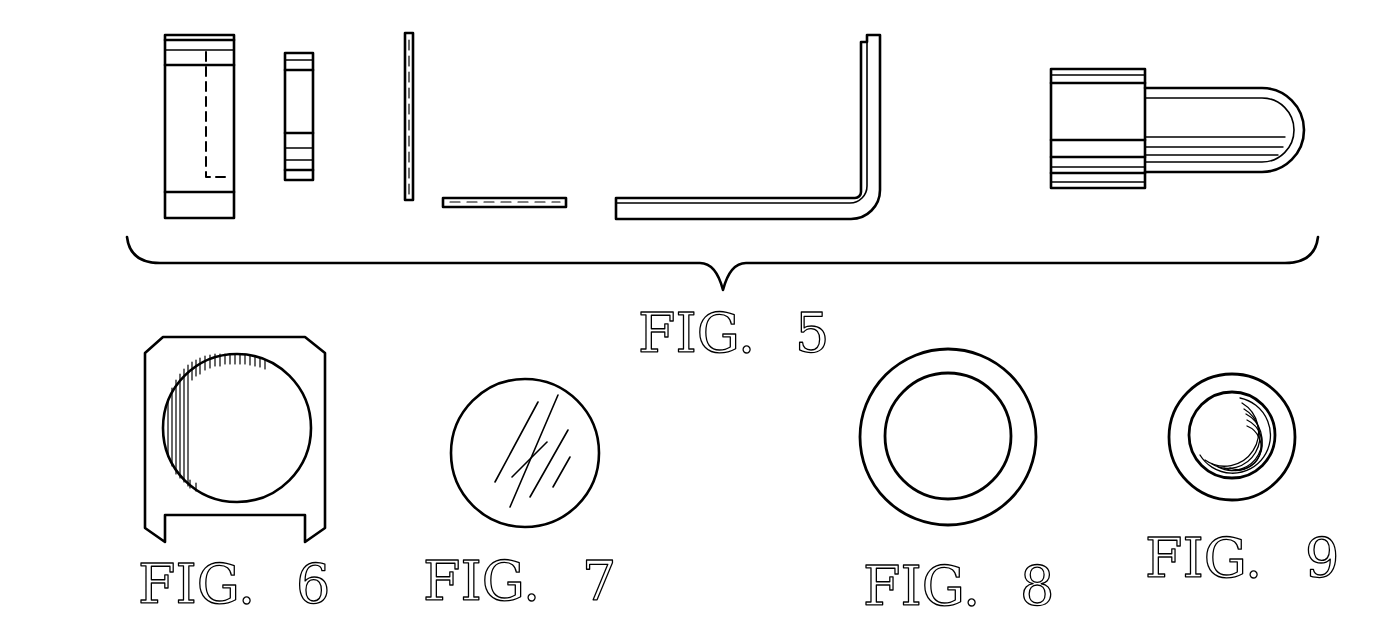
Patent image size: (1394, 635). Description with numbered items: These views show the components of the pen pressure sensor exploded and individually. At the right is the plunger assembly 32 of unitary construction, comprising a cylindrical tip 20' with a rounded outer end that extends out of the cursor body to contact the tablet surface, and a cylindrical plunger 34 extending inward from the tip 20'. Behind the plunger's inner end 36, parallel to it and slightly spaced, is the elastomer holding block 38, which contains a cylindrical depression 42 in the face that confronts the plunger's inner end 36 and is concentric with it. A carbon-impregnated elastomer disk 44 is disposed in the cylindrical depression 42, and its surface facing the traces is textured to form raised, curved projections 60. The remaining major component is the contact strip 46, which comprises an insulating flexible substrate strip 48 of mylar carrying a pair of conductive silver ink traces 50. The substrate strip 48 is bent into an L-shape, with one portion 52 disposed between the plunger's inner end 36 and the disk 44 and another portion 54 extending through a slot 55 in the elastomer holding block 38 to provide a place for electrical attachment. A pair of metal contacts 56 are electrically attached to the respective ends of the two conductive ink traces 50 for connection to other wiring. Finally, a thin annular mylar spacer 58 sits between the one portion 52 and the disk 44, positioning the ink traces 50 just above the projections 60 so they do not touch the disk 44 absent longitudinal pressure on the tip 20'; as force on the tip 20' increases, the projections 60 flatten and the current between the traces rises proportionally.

In FIG. 5, the cylindrical tip 20' is at (1250, 119).
In FIG. 9, the cylindrical tip 20' is at (1192, 435).
In FIG. 9, the plunger assembly 32 is at (1240, 402).
In FIG. 5, the cylindrical plunger 34 is at (1117, 82).
In FIG. 9, the cylindrical plunger 34 is at (1245, 374).
In FIG. 5, the plunger's inner end 36 is at (1051, 166).
In FIG. 5, the elastomer holding block 38 is at (165, 84).
In FIG. 6, the elastomer holding block 38 is at (145, 420).
In FIG. 6, the cylindrical depression 42 is at (222, 432).
In FIG. 5, the carbon-impregnated elastomer disk 44 is at (299, 181).
In FIG. 7, the carbon-impregnated elastomer disk 44 is at (583, 406).
In FIG. 5, the contact strip 46 is at (918, 198).
In FIG. 5, the substrate strip 48 is at (820, 210).
In FIG. 5, the conductive ink traces 50 is at (736, 198).
In FIG. 5, the one portion 52 is at (873, 88).
In FIG. 5, the another portion 54 is at (648, 211).
In FIG. 5, the slot 55 is at (222, 210).
In FIG. 6, the slot 55 is at (285, 528).
In FIG. 5, the metal contacts 56 is at (483, 198).
In FIG. 5, the mylar spacer 58 is at (413, 43).
In FIG. 8, the mylar spacer 58 is at (915, 490).
In FIG. 5, the projections 60 is at (313, 118).
In FIG. 7, the projections 60 is at (475, 437).